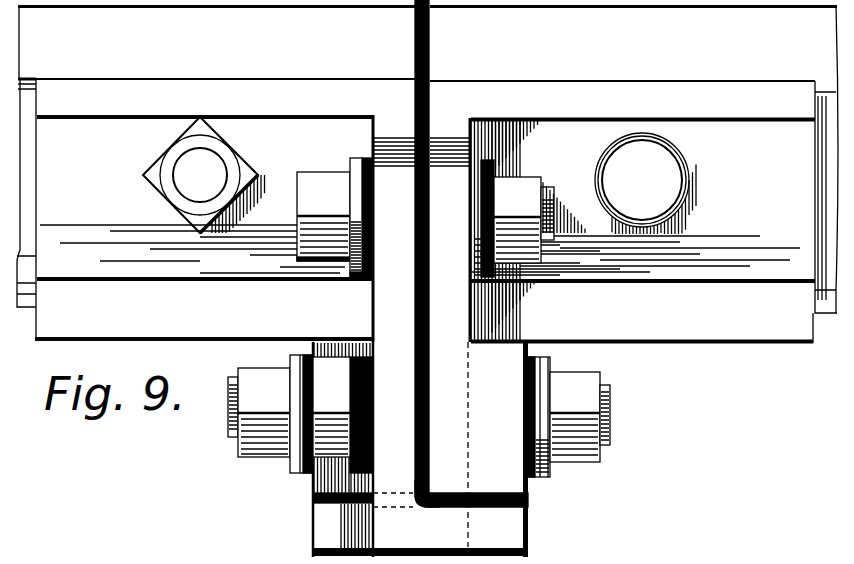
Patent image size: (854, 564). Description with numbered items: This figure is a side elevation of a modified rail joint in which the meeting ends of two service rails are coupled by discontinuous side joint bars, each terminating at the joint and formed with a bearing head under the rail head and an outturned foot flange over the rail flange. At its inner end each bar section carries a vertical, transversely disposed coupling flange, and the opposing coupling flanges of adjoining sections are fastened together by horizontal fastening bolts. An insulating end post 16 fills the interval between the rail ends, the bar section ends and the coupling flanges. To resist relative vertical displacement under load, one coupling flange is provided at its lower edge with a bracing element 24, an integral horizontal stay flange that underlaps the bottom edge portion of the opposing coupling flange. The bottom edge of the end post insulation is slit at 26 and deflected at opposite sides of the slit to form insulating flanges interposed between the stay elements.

The insulating end post 16 is at (415, 47).
The bracing element 24 is at (322, 535).
The slit 26 is at (411, 497).